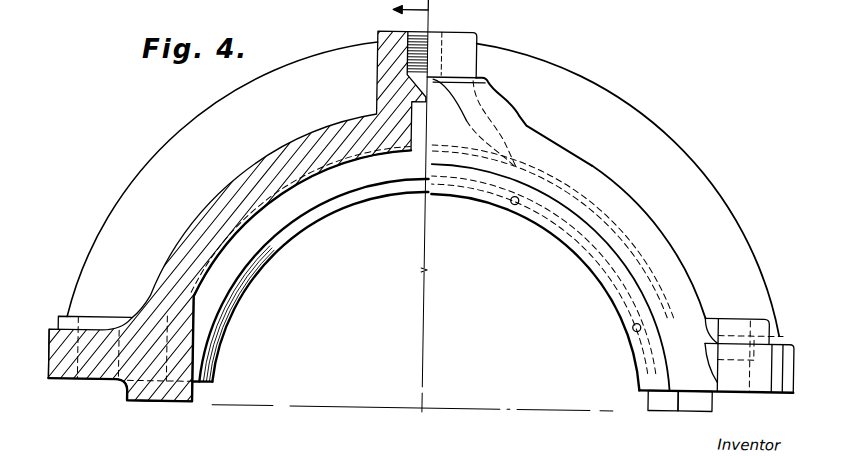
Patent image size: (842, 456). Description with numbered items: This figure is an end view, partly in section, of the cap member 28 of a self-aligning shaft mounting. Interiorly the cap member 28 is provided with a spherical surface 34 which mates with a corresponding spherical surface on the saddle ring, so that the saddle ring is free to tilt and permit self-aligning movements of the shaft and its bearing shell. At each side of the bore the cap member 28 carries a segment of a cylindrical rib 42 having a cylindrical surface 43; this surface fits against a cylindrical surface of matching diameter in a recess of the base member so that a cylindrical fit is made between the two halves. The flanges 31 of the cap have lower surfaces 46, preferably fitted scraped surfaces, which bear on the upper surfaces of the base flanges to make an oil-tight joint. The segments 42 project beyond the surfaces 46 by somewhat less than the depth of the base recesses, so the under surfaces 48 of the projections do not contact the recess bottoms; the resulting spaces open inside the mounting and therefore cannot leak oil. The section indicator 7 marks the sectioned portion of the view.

The section line 7- 7 is at (401, 8).
The cap member 28 is at (699, 188).
The spherical surface 34 is at (344, 163).
The flanges 31 is at (54, 339).
The lower surfaces 46 is at (70, 381).
The cylindrical surface 43 is at (124, 398).
The segment of a cylindrical rib 42 is at (149, 402).
The under surfaces 48 is at (167, 404).